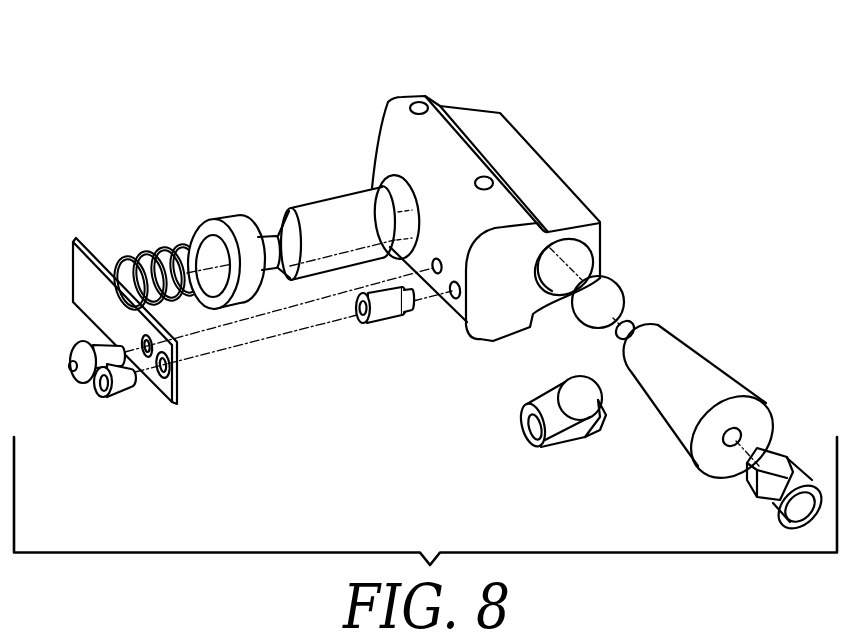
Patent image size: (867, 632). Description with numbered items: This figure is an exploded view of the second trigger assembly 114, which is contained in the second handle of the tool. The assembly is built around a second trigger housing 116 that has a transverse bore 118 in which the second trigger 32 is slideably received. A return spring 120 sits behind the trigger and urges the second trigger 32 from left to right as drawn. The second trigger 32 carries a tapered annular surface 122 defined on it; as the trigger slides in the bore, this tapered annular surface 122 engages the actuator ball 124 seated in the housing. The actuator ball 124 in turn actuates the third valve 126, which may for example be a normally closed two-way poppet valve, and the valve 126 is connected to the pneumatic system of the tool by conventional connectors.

The second trigger assembly 114 is at (617, 63).
The second trigger housing 116 is at (448, 108).
The transverse bore 118 is at (372, 188).
The second trigger 32 is at (268, 233).
The return spring 120 is at (133, 256).
The tapered annular surface 122 is at (298, 252).
The actuator ball 124 is at (625, 290).
The third valve 126 is at (707, 343).